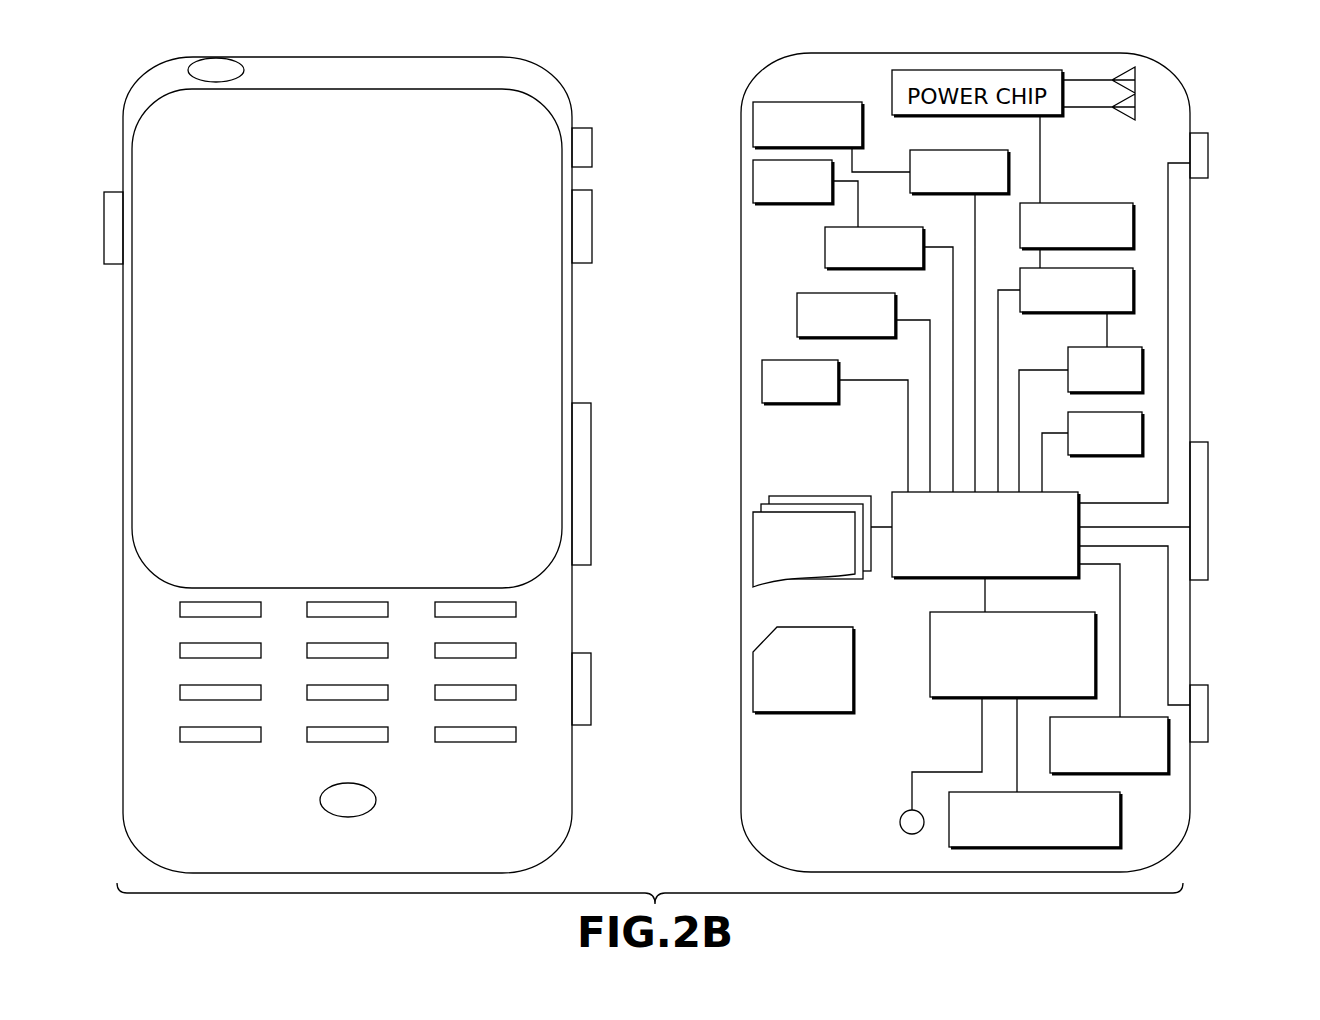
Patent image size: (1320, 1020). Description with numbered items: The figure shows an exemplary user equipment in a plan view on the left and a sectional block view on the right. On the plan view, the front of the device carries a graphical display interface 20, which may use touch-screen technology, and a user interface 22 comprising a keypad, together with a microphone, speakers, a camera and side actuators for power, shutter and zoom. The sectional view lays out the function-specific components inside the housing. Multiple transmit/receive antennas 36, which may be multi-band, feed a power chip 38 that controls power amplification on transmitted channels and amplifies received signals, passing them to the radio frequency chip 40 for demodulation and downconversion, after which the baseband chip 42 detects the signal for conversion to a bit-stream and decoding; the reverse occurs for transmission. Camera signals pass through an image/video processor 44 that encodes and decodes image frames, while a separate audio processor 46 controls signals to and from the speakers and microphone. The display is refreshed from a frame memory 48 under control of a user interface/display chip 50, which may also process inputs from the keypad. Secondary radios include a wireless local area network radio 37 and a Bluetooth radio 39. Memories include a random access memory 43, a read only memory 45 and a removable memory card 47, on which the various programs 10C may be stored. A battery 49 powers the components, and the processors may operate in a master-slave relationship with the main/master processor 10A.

The main/master processor 10A is at (892, 492).
The programs 10C is at (753, 548).
The graphical display interface 20 is at (172, 432).
The user interface 22 is at (152, 593).
The transmit/receive antennas 36 is at (1135, 80).
The wireless local area network radio 37 is at (797, 313).
The power chip 38 is at (823, 53).
The Bluetooth radio 39 is at (762, 380).
The radio frequency chip 40 is at (1133, 225).
The baseband chip 42 is at (1133, 290).
The random access memory 43 is at (1142, 368).
The image/video processor 44 is at (1008, 172).
The read only memory 45 is at (1142, 432).
The audio processor 46 is at (825, 247).
The memory card 47 is at (753, 667).
The frame memory 48 is at (1120, 820).
The battery 49 is at (1168, 745).
The user interface/display chip 50 is at (930, 688).